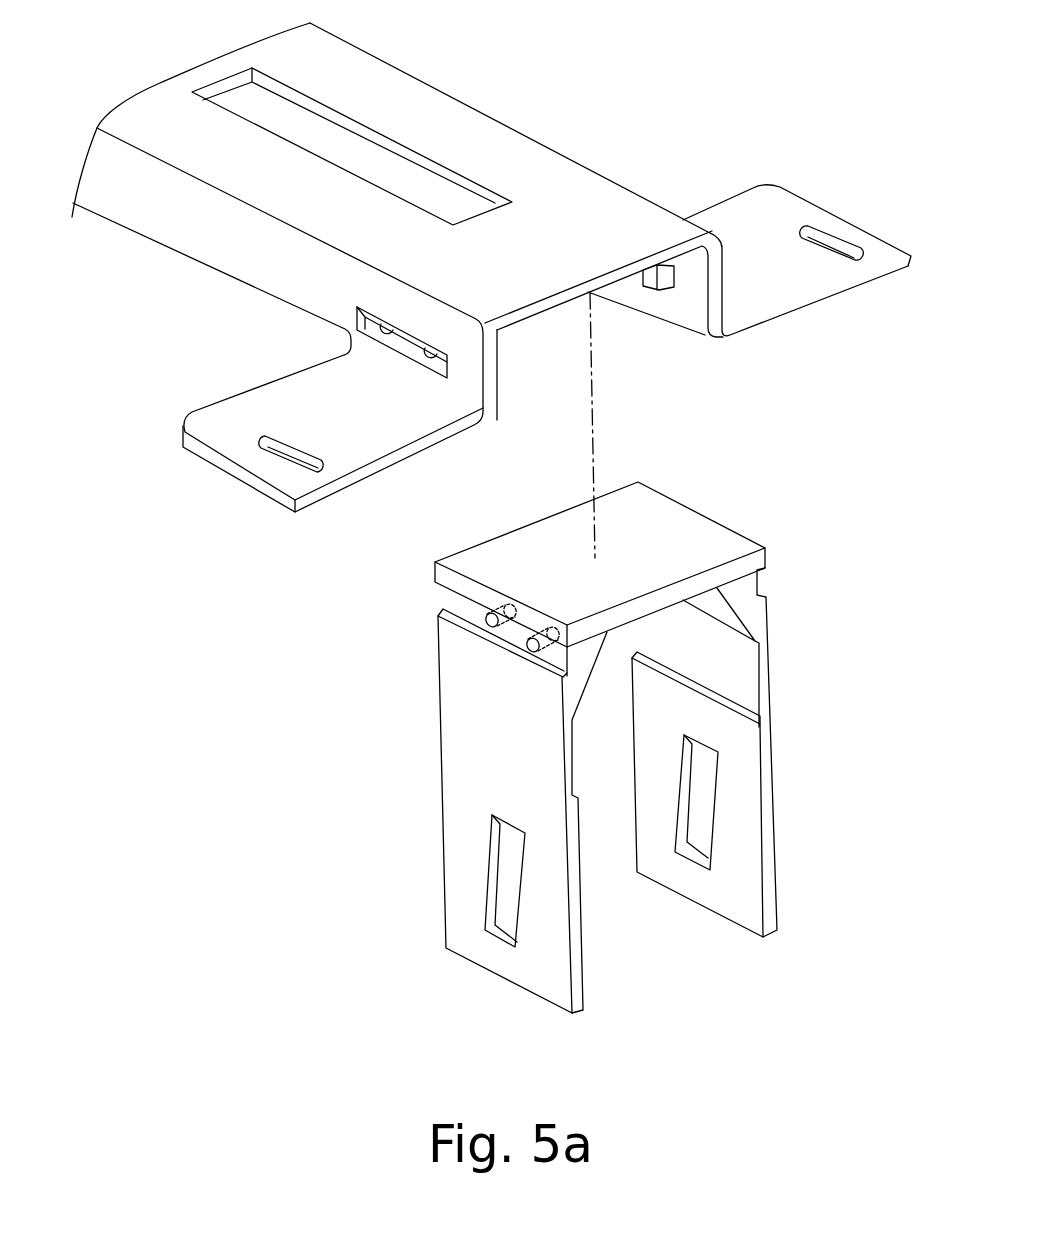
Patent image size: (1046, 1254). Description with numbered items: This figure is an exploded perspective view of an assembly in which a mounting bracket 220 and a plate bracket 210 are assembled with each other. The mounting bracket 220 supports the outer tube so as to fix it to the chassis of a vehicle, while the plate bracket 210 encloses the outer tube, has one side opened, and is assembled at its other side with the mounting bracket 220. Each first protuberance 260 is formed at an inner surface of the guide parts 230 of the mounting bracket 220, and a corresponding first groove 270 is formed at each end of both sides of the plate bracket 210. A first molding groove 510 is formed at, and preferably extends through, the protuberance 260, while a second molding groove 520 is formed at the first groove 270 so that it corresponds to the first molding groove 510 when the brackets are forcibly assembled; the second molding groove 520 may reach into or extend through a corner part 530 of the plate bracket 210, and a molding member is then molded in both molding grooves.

The first plate bracket 210 is at (762, 791).
The first mounting bracket 220 is at (491, 292).
The guide parts 230 is at (197, 233).
The first protuberance 260 is at (383, 343).
The first groove 270 is at (437, 613).
The first molding groove 510 is at (357, 330).
The second molding groove 520 is at (525, 645).
The corner part 530 is at (583, 667).